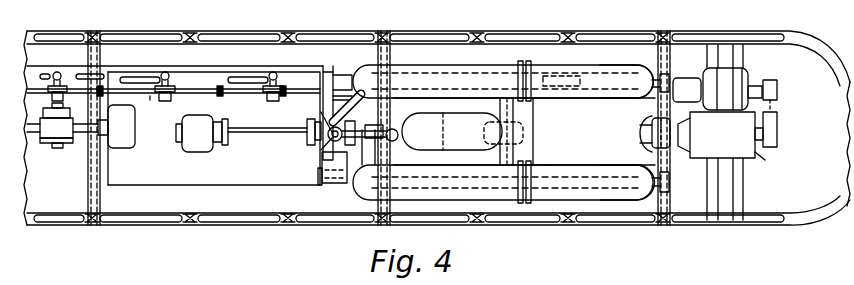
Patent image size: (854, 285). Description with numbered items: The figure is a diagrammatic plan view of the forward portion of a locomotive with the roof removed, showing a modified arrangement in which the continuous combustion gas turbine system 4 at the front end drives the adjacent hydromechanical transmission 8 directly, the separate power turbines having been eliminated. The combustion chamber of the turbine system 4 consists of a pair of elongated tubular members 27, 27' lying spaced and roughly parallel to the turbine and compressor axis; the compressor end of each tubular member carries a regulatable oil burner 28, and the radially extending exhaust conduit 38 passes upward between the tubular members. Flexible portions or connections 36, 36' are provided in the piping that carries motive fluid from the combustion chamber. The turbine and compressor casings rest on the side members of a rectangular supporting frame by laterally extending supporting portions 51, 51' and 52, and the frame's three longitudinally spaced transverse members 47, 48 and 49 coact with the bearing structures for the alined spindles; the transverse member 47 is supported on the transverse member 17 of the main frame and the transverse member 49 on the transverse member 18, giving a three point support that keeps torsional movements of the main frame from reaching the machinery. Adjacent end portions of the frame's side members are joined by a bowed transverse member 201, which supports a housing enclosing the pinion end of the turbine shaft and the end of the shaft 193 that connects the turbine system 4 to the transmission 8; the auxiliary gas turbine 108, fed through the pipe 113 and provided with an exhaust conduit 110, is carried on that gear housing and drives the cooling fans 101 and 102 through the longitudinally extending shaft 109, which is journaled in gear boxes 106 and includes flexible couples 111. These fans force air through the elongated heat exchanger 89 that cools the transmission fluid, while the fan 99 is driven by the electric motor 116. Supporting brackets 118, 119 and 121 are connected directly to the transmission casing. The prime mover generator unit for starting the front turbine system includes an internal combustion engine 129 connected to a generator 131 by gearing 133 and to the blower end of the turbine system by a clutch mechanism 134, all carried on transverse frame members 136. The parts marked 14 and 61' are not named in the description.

The continuous combustion gas turbine system 4 is at (596, 137).
The hydromechanical transmission 8 is at (210, 185).
The rail ties 14 is at (192, 38).
The transverse member of the main frame 17 is at (656, 208).
The transverse member of the main frame 18 is at (392, 207).
The elongated tubular member 27 is at (627, 72).
The pipe end section 27' is at (626, 190).
The regulatable oil burner 28 is at (670, 80).
The flexible connection 36 is at (535, 73).
The flange 36' is at (513, 188).
The exhaust conduit 38 is at (475, 120).
The transverse member of the supporting frame 47 is at (663, 138).
The transverse member of the supporting frame 48 is at (535, 150).
The transverse member of the supporting frame 49 is at (372, 128).
The laterally extending supporting portion 51 is at (503, 72).
The pipe 51' is at (503, 190).
The laterally extending supporting portion 52 is at (506, 67).
The enclosure wall 61' is at (131, 139).
The elongated heat exchanger 89 is at (222, 50).
The fan 99 is at (76, 70).
The fan 101 is at (140, 75).
The fan 102 is at (248, 75).
The gear box 106 is at (283, 96).
The auxiliary gas turbine 108 is at (310, 145).
The longitudinally extending shaft 109 is at (150, 100).
The exhaust conduit 110 is at (368, 142).
The flexible couple 111 is at (222, 96).
The pipe 113 is at (356, 108).
The electric motor 116 is at (66, 143).
The supporting bracket 118 is at (341, 167).
The supporting bracket 119 is at (330, 70).
The supporting bracket 121 is at (108, 127).
The internal combustion engine 129 is at (775, 160).
The generator 131 is at (740, 76).
The gearing 133 is at (775, 112).
The clutch mechanism 134 is at (690, 138).
The transverse frame member 136 is at (708, 208).
The shaft 193 is at (258, 130).
The bowed transverse member 201 is at (322, 168).